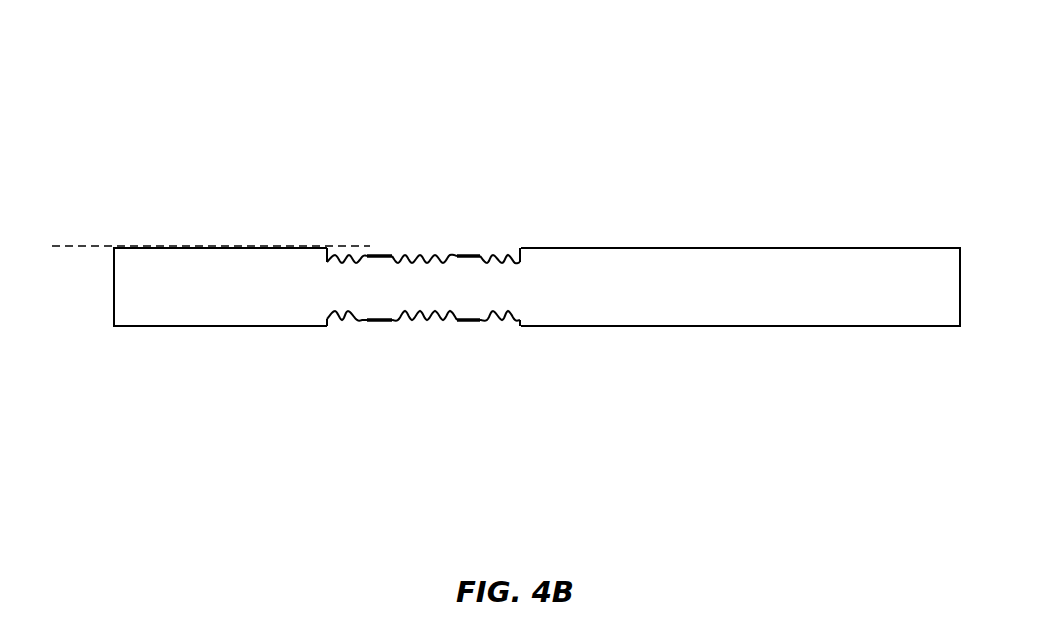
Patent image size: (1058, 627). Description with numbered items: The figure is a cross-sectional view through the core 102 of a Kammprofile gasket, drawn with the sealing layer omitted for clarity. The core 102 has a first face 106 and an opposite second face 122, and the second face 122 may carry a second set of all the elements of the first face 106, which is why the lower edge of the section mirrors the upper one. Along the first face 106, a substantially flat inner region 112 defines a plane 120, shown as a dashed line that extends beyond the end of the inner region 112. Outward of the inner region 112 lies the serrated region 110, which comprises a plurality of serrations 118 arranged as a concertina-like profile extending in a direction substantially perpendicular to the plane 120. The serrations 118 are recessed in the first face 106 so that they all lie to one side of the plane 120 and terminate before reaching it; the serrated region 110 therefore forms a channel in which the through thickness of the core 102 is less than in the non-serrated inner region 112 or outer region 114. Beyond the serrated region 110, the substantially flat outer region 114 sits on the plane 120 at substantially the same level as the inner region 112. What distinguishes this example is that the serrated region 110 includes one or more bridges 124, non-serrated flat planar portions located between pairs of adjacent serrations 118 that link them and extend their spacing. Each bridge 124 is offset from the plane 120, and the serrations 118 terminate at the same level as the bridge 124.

The core 102 is at (252, 110).
The first face 106 is at (697, 234).
The serrated region 110 is at (445, 224).
The inner region 112 is at (187, 219).
The outer region 114 is at (810, 225).
The serrations 118 is at (506, 255).
The plane 120 is at (92, 248).
The second face 122 is at (715, 341).
The bridge 124 is at (382, 248).